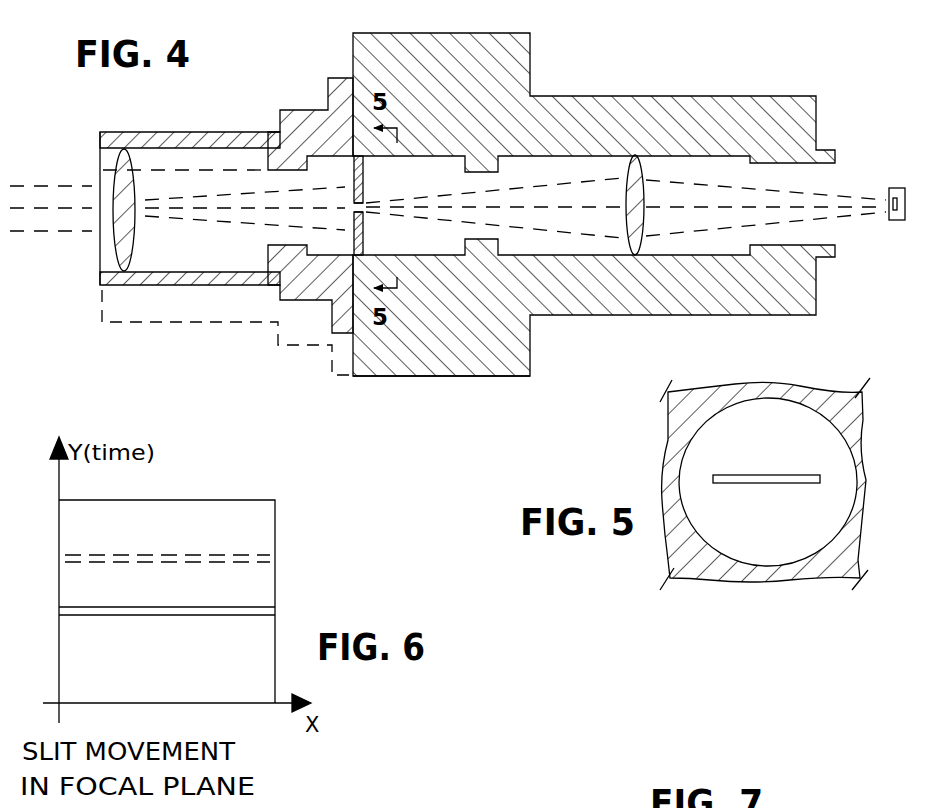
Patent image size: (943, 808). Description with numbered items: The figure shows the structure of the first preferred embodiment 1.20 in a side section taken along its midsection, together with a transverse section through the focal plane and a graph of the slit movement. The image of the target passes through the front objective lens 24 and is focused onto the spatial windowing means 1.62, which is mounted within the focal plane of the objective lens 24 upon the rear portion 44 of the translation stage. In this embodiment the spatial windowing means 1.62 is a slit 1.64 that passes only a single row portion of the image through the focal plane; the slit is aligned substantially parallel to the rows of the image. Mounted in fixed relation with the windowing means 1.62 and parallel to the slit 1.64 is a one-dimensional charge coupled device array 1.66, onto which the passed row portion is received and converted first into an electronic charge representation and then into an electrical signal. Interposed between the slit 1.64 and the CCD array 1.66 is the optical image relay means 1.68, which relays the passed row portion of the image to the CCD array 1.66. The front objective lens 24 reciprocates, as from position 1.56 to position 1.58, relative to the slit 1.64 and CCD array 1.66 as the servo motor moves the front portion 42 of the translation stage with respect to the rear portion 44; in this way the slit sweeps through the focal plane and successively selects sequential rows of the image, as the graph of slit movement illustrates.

In FIG. 4, the first preferred embodiment 1.20 is at (695, 42).
In FIG. 4, the front portion of the translation stage 42 is at (343, 78).
In FIG. 4, the rear portion of the translation stage 44 is at (368, 377).
In FIG. 4, the position 1.56 is at (165, 131).
In FIG. 4, the position 1.58 is at (135, 325).
In FIG. 4, the first optical objective lens 24 is at (118, 240).
In FIG. 4, the spatial windowing means 1.62 is at (364, 189).
In FIG. 5, the spatial windowing means 1.62 is at (736, 458).
In FIG. 4, the slit 1.64 is at (370, 220).
In FIG. 5, the slit 1.64 is at (745, 485).
In FIG. 6, the slit 1.64 is at (118, 618).
In FIG. 4, the optical image relay means 1.68 is at (626, 161).
In FIG. 4, the one-dimensional charge coupled device array 1.66 is at (899, 188).